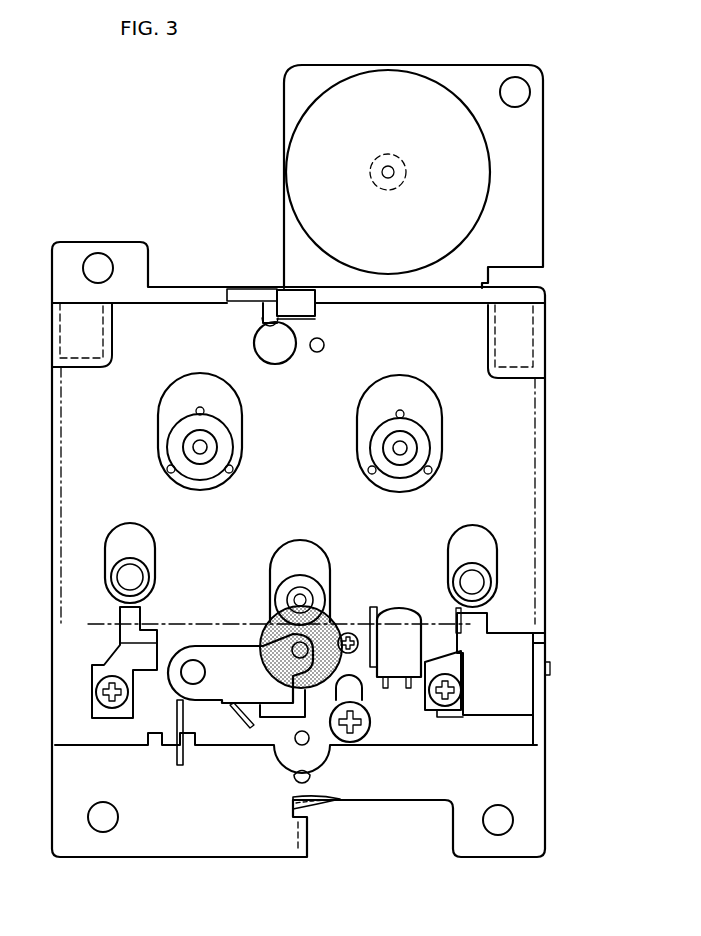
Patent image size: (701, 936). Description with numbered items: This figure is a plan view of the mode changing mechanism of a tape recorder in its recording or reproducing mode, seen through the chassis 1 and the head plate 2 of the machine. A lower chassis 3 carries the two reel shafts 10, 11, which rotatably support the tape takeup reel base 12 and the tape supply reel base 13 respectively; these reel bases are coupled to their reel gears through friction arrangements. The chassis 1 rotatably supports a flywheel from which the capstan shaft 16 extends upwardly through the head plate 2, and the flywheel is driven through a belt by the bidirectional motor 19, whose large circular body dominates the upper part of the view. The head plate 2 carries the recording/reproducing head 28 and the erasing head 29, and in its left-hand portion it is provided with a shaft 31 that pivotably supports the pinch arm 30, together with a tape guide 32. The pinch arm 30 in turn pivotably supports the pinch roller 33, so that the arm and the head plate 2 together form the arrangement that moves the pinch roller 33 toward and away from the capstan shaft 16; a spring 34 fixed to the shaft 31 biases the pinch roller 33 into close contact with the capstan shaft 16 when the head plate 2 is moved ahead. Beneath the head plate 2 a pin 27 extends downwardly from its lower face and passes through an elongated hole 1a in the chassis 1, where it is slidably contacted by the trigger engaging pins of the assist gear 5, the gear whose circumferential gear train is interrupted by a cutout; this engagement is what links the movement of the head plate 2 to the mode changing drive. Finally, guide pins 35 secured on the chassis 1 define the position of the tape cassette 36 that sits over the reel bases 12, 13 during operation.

The chassis 1 is at (548, 303).
The elongated hole 1a is at (291, 778).
The head plate 2 is at (185, 300).
The lower chassis 3 is at (283, 237).
The assist gear 5 is at (322, 811).
The reel shaft 10 is at (197, 447).
The reel shaft 11 is at (405, 448).
The tape takeup reel base 12 is at (172, 452).
The tape supply reel base 13 is at (420, 432).
The capstan shaft 16 is at (300, 595).
The bidirectional motor 19 is at (305, 130).
The pin 27 is at (306, 741).
The recording/reproducing head 28 is at (392, 609).
The erasing head 29 is at (485, 613).
The pinch arm 30 is at (243, 645).
The shaft 31 is at (193, 661).
The tape guide 32 is at (118, 622).
The pinch roller 33 is at (333, 620).
The spring 34 is at (180, 765).
The guide pins 35 is at (120, 577).
The tape cassette 36 is at (536, 470).